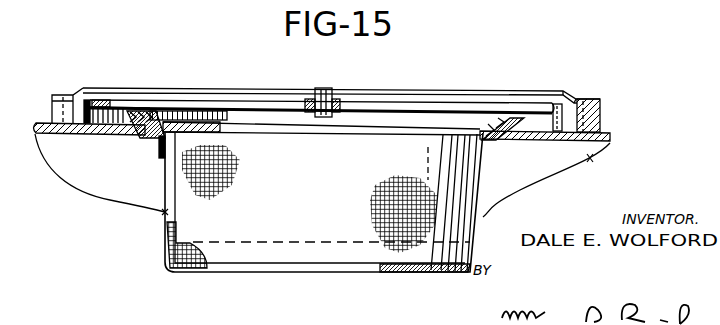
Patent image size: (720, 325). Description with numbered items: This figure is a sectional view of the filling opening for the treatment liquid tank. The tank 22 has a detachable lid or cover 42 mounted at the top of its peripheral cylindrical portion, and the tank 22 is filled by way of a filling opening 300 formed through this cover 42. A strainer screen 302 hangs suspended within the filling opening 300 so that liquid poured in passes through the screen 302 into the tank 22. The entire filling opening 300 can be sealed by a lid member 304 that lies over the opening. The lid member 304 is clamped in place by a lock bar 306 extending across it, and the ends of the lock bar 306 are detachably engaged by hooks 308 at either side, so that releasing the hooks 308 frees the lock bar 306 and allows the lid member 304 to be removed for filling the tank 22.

The tank 22 is at (590, 158).
The lid or cover 42 is at (592, 155).
The filling opening 300 is at (147, 135).
The strainer screen 302 is at (168, 212).
The lid member 304 is at (250, 112).
The lock bar 306 is at (433, 73).
The hooks 308 is at (68, 91).